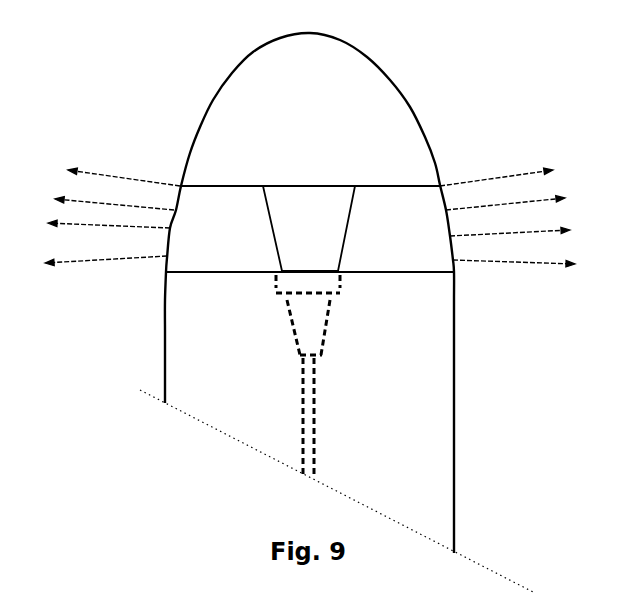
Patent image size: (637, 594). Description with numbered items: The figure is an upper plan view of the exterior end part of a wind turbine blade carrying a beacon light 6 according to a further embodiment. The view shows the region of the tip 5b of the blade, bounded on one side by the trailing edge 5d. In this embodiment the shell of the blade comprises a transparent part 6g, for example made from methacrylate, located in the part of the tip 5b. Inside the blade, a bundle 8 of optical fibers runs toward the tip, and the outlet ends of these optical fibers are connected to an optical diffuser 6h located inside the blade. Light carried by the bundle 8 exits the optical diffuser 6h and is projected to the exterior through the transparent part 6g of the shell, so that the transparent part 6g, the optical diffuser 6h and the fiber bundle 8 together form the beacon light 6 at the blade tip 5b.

The tip 5b is at (310, 35).
The trailing edge 5d is at (455, 372).
The beacon light 6 is at (232, 171).
The transparent part 6g is at (228, 225).
The optical diffuser 6h is at (306, 212).
The bundle of optical fibers 8 is at (319, 420).